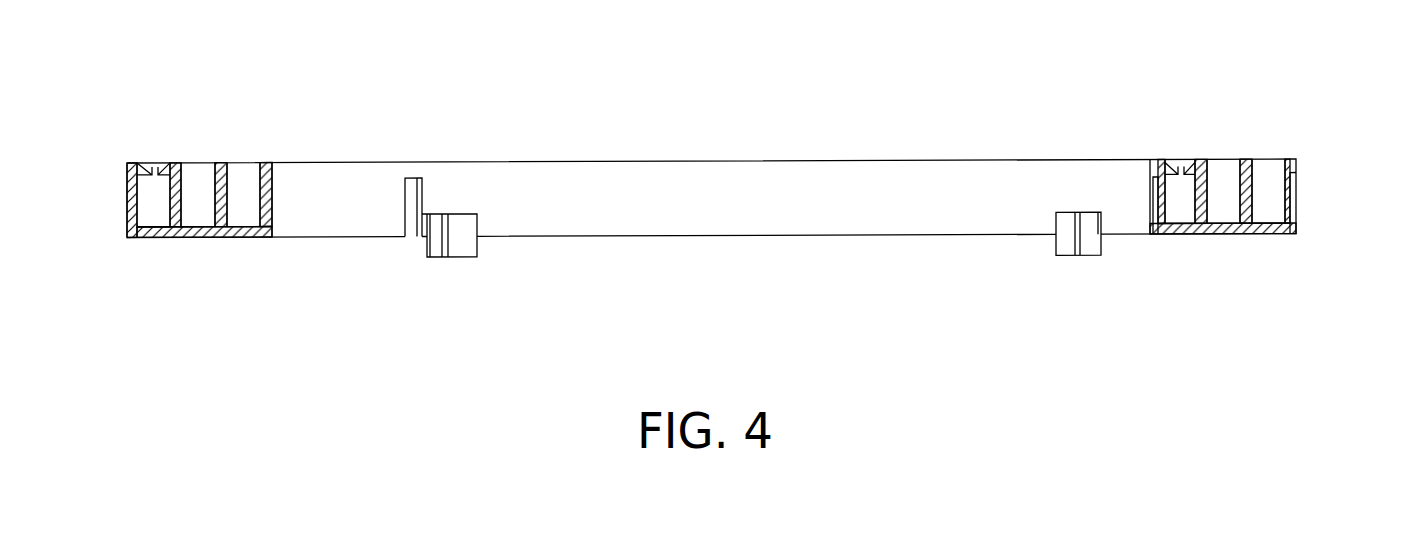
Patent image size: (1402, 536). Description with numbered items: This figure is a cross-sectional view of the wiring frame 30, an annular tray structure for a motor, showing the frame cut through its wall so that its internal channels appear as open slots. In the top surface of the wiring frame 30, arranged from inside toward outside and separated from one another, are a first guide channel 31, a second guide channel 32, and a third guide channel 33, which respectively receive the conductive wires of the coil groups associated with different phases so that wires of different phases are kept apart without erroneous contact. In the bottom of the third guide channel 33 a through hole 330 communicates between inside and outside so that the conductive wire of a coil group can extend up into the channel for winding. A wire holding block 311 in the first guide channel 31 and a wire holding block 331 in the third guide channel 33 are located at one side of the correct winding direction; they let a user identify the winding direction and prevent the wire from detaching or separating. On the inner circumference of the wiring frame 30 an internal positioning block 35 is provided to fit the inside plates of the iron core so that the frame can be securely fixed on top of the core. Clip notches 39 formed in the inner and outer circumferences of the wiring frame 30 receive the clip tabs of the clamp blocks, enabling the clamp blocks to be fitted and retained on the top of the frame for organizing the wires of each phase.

The wiring frame 30 is at (612, 178).
The first guide channel 31 is at (243, 175).
The second guide channel 32 is at (197, 172).
The third guide channel 33 is at (140, 198).
The through hole 330 is at (153, 240).
The wire holding block 331 is at (146, 168).
The wire holding block 311 is at (1168, 172).
The internal positioning block 35 is at (455, 250).
The clip notch 39 is at (415, 198).